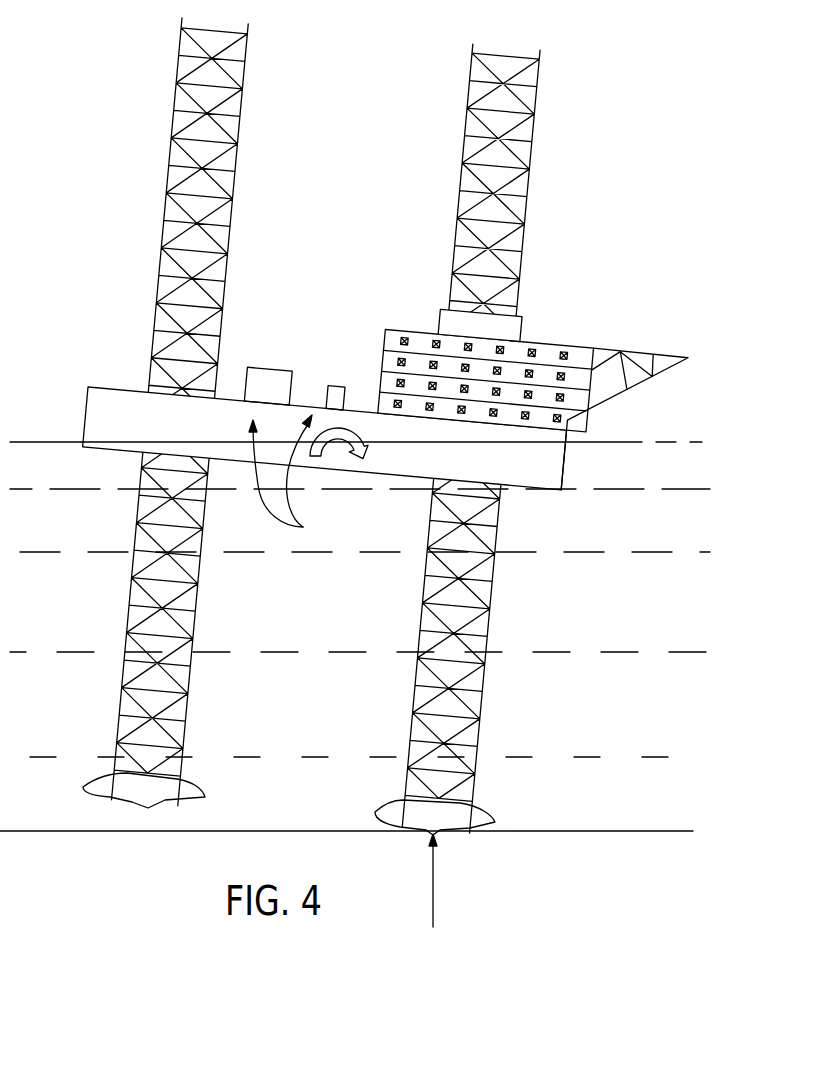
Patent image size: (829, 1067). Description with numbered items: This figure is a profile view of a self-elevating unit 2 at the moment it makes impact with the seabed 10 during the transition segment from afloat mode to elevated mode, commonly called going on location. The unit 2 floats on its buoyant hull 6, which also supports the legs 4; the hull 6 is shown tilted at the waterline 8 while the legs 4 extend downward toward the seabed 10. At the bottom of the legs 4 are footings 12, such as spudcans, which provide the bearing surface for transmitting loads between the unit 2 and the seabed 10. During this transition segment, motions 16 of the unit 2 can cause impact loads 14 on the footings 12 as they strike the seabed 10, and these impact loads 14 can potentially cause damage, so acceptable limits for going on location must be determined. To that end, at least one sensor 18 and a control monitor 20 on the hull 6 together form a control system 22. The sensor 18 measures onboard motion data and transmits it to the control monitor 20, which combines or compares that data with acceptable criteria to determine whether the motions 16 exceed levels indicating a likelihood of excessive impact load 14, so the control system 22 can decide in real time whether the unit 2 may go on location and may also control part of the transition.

The self-elevating unit 2 is at (366, 426).
The legs 4 is at (472, 675).
The buoyant hull 6 is at (530, 464).
The waterline 8 is at (610, 441).
The seabed 10 is at (672, 831).
The footings 12 is at (480, 820).
The impact loads 14 is at (436, 886).
The motions 16 is at (328, 428).
The sensor 18 is at (345, 384).
The control monitor 20 is at (272, 368).
The control system 22 is at (303, 527).